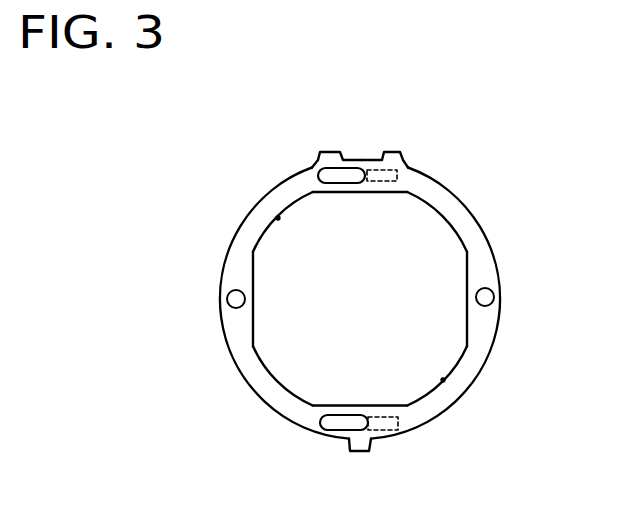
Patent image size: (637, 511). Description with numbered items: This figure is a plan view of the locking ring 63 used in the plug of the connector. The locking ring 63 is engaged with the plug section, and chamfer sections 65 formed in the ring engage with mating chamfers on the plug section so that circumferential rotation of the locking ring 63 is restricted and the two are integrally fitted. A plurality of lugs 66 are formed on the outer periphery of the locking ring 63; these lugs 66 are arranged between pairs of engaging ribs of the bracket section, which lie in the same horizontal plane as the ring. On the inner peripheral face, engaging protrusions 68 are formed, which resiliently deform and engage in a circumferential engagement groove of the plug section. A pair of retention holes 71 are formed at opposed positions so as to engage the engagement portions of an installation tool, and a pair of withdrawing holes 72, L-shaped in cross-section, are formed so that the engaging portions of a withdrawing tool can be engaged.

The locking ring 63 is at (255, 189).
The chamfer section 65 is at (388, 197).
The lugs 66 is at (328, 152).
The engaging protrusions 68 is at (278, 218).
The retention holes 71 is at (236, 299).
The withdrawing holes 72 is at (342, 177).